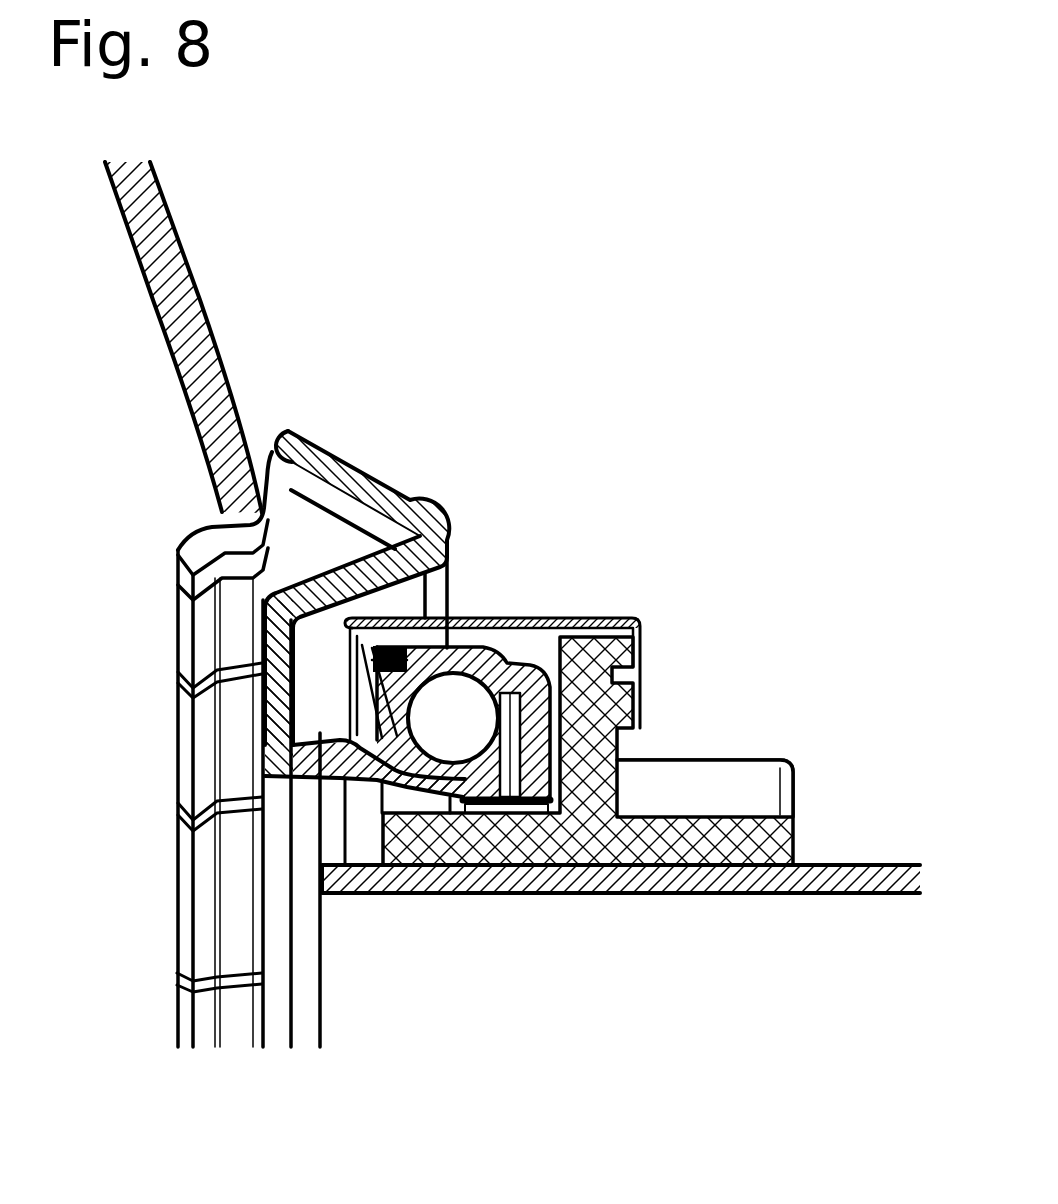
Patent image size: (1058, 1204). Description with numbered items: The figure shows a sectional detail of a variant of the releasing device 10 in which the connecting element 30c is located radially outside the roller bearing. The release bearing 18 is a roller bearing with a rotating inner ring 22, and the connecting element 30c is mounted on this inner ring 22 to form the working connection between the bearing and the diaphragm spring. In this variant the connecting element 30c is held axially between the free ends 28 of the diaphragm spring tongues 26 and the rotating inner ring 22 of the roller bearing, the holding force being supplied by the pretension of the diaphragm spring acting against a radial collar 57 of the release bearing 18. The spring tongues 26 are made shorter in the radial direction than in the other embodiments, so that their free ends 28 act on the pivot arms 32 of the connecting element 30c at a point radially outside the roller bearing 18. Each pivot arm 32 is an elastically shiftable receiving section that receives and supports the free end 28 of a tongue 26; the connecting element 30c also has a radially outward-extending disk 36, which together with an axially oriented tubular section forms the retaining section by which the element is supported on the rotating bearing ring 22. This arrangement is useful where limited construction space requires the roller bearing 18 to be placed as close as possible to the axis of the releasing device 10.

The releasing device 10 is at (706, 577).
The release bearing 18 is at (590, 596).
The inner bearing ring 22 is at (303, 750).
The spring tongues 26 is at (160, 253).
The free ends of the spring tongues 28 is at (232, 508).
The connecting element 30c is at (393, 540).
The pivot arm 32 is at (372, 452).
The disk 36 is at (303, 712).
The radial collar 57 is at (440, 598).